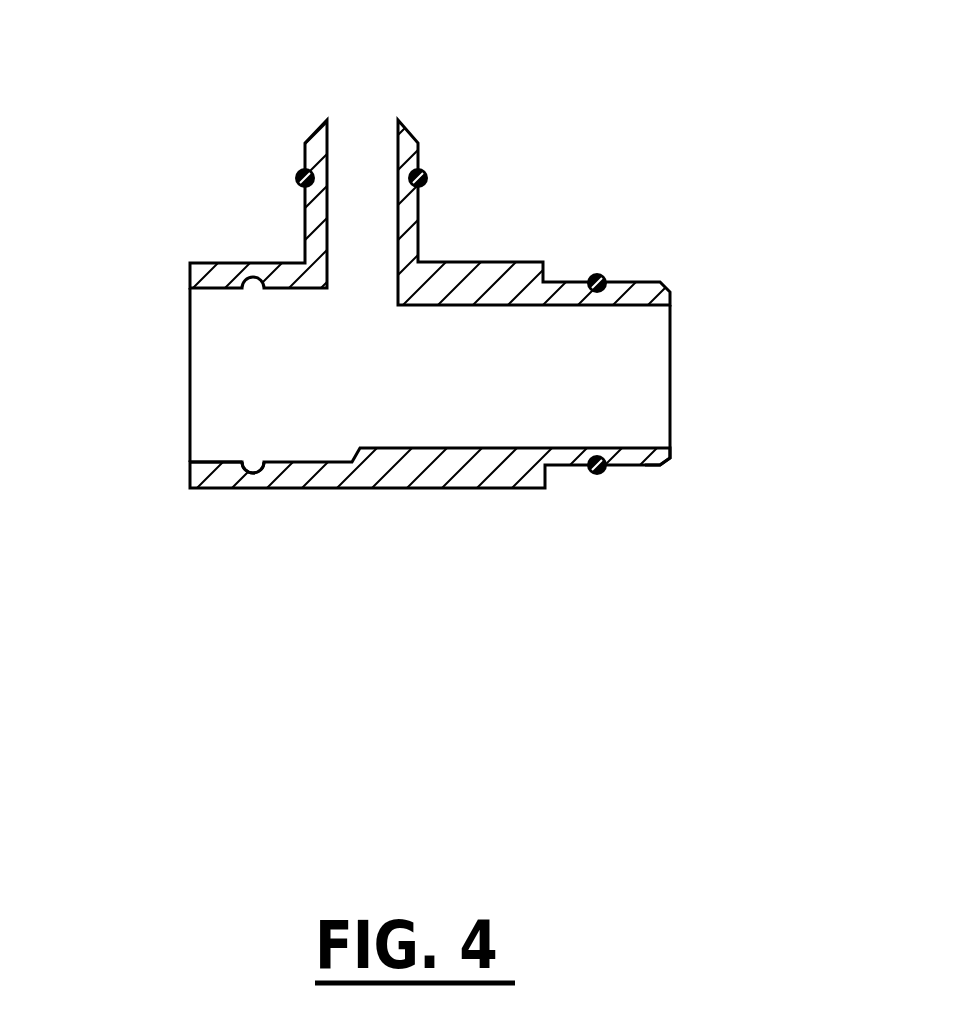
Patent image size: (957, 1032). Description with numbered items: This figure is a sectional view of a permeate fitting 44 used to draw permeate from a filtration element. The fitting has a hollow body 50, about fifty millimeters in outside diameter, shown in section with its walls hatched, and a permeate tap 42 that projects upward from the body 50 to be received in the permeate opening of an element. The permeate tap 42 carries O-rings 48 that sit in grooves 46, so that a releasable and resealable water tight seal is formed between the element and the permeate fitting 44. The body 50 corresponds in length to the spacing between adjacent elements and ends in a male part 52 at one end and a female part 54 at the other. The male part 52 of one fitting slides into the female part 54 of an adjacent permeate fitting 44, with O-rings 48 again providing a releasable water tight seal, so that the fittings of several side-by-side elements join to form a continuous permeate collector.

The permeate tap 42 is at (414, 138).
The permeate fitting 44 is at (657, 532).
The groove 46 is at (254, 468).
The O-ring 48 is at (430, 180).
The body 50 is at (448, 490).
The male part 52 is at (668, 462).
The female part 54 is at (223, 458).